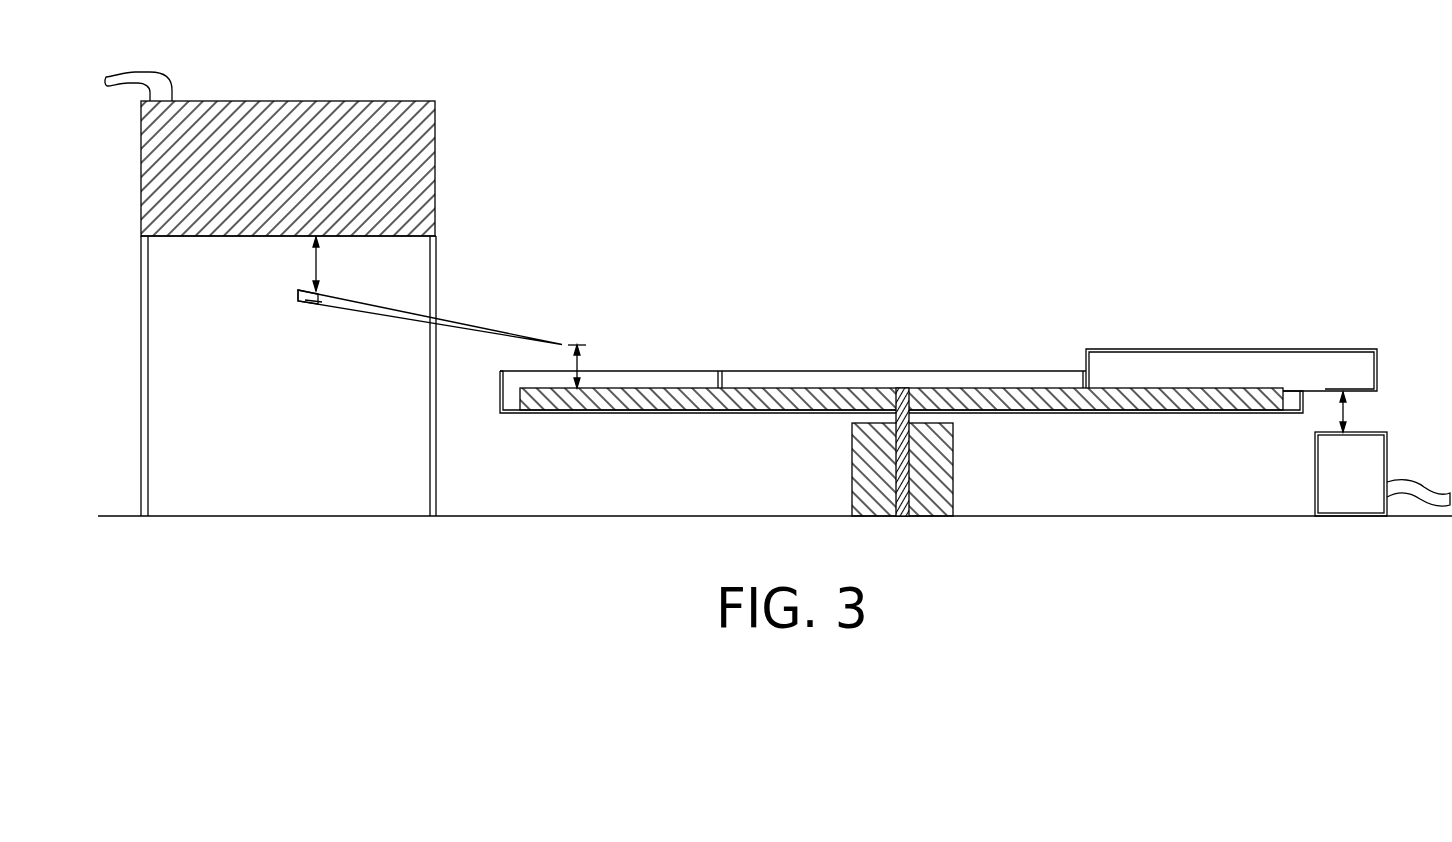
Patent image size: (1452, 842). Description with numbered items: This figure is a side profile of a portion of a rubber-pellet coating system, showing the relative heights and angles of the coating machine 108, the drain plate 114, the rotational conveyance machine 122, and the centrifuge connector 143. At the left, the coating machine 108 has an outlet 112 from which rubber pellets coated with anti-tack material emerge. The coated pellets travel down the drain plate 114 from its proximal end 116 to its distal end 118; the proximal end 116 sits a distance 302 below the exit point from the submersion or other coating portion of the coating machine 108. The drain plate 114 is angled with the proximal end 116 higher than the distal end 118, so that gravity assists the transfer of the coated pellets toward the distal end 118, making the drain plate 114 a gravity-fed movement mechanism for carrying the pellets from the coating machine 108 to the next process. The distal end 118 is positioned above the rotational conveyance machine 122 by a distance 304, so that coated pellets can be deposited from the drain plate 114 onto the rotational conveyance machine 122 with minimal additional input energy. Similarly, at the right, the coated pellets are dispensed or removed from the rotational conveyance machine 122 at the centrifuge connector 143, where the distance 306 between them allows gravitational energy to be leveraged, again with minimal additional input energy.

The coating machine 108 is at (418, 101).
The outlet 112 is at (437, 291).
The drain plate 114 is at (452, 316).
The proximal end 116 is at (299, 311).
The distal end 118 is at (545, 352).
The rotational conveyance machine 122 is at (674, 388).
The centrifuge connector 143 is at (1421, 497).
The distance 302 is at (315, 266).
The distance 304 is at (581, 365).
The distance 306 is at (1347, 407).